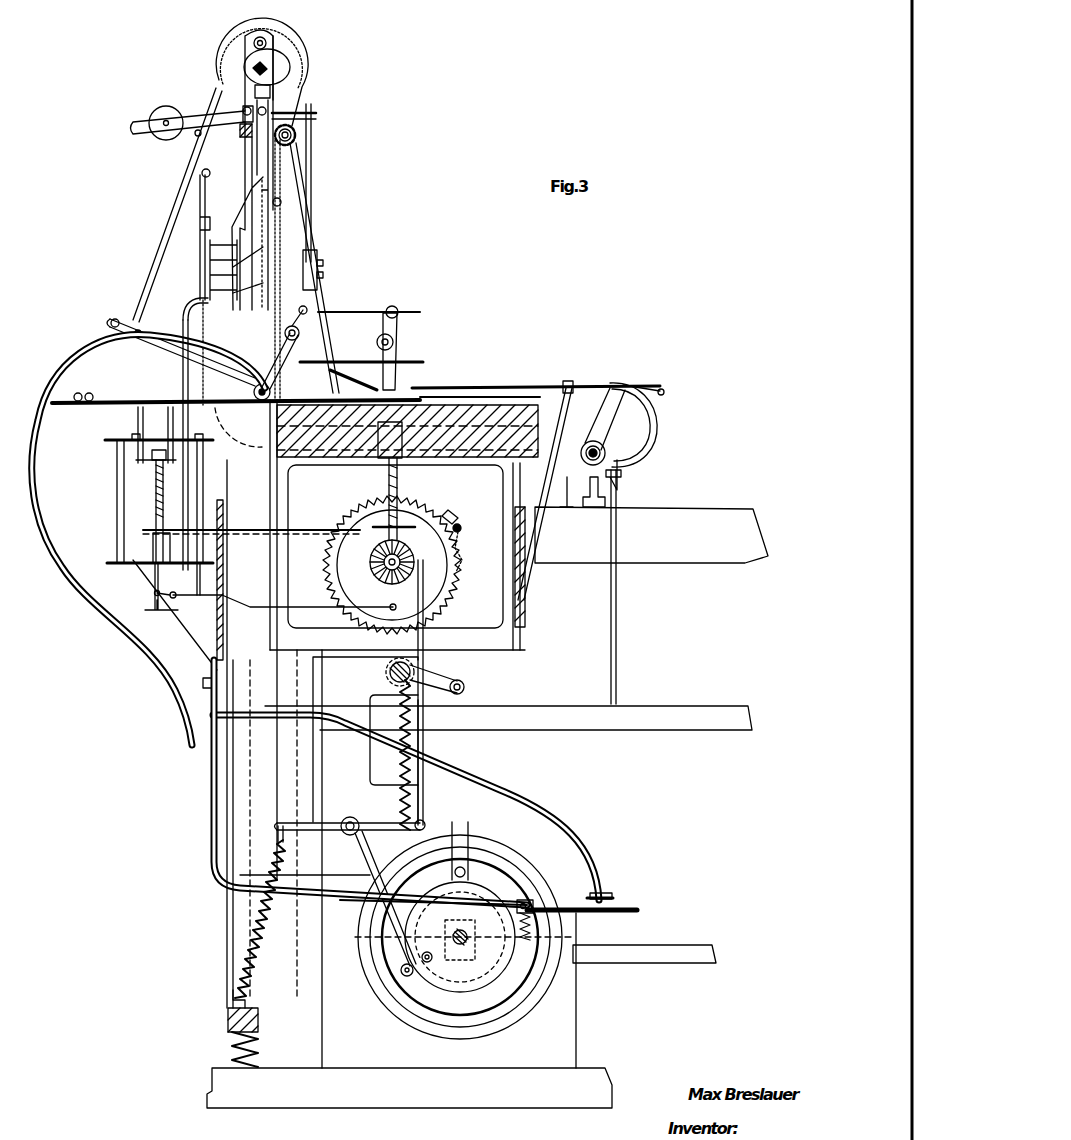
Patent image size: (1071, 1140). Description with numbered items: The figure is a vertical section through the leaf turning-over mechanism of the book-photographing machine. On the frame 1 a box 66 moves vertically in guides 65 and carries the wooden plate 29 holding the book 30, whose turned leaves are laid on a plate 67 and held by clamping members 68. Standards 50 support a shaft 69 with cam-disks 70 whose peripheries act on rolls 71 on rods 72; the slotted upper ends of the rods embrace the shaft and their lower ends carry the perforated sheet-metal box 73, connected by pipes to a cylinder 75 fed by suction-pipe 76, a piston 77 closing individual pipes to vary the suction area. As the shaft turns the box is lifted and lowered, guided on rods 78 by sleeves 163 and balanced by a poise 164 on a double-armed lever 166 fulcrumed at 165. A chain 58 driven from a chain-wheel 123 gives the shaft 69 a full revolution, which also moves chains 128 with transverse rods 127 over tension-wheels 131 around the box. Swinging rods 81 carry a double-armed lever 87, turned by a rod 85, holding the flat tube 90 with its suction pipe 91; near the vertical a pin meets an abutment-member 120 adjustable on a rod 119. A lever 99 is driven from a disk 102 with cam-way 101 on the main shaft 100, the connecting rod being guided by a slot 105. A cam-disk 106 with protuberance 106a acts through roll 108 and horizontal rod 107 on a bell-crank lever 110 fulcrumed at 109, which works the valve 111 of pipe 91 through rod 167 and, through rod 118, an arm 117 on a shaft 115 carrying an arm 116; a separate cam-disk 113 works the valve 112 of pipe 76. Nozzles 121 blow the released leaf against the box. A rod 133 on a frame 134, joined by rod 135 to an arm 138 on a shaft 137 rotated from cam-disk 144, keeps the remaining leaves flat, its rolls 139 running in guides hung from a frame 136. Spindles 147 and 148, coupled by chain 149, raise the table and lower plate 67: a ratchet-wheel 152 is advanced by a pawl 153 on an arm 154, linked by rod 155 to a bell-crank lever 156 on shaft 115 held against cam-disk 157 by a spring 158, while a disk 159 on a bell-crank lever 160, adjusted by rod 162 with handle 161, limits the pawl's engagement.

The frame 1 is at (247, 910).
The wooden plate 29 is at (407, 448).
The book 30 is at (296, 430).
The standards 50 is at (285, 250).
The chain 58 is at (322, 300).
The guides 65 is at (527, 643).
The box 66 is at (513, 543).
The plate 67 is at (100, 407).
The clamping members 68 is at (80, 406).
The shaft 69 is at (270, 68).
The cam-disks 70 is at (282, 78).
The rolls 71 is at (276, 42).
The rods 72 is at (270, 170).
The sheet-metal box 73 is at (257, 228).
The cylinder 75 is at (207, 250).
The suction-pipe 76 is at (190, 305).
The piston 77 is at (207, 193).
The rods 78 is at (242, 173).
The rods 81 is at (303, 330).
The rod 85 is at (400, 314).
The double-armed lever 87 is at (400, 340).
The flat tube 90 is at (424, 362).
The suction pipe 91 is at (45, 522).
The double-armed lever 99 is at (432, 684).
The main shaft 100 is at (533, 940).
The cam-way 101 is at (533, 953).
The disk 102 is at (537, 963).
The slot 105 is at (433, 967).
The cam-disk 106 is at (450, 990).
The protuberance 106a is at (380, 921).
The horizontal rod 107 is at (375, 937).
The roll 108 is at (400, 969).
The fulcrum 109 is at (385, 898).
The bell-crank lever 110 is at (367, 883).
The valve 111 is at (253, 727).
The valve 112 is at (598, 893).
The cam-disk 113 is at (540, 983).
The shaft 115 is at (352, 822).
The arm 116 is at (282, 820).
The arm 117 is at (346, 820).
The rod 118 is at (339, 853).
The rod 119 is at (312, 128).
The abutment-member 120 is at (338, 268).
The nozzles 121 is at (585, 387).
The chain-wheel 123 is at (250, 425).
The transverse rods 127 is at (197, 162).
The chains 128 is at (205, 185).
The tension-wheels 131 is at (296, 136).
The rod 133 is at (440, 388).
The frame 134 is at (457, 388).
The rod 135 is at (602, 388).
The frame 136 is at (522, 430).
The shaft 137 is at (660, 440).
The arm 138 is at (602, 438).
The rolls 139 is at (502, 378).
The cam-disk 144 is at (272, 560).
The spindle 147 is at (399, 484).
The spindle 148 is at (155, 505).
The chain 149 is at (312, 512).
The ratchet-wheel 152 is at (345, 560).
The pawl 153 is at (461, 549).
The arm 154 is at (458, 580).
The rod 155 is at (420, 647).
The bell-crank lever 156 is at (373, 828).
The cam-disk 157 is at (453, 1033).
The spring 158 is at (391, 755).
The disk 159 is at (453, 514).
The bell-crank lever 160 is at (460, 530).
The handle 161 is at (160, 617).
The rod 162 is at (332, 603).
The sleeves 163 is at (221, 176).
The poise 164 is at (198, 133).
The fulcrum 165 is at (165, 110).
The double-armed lever 166 is at (132, 125).
The rod 167 is at (243, 820).